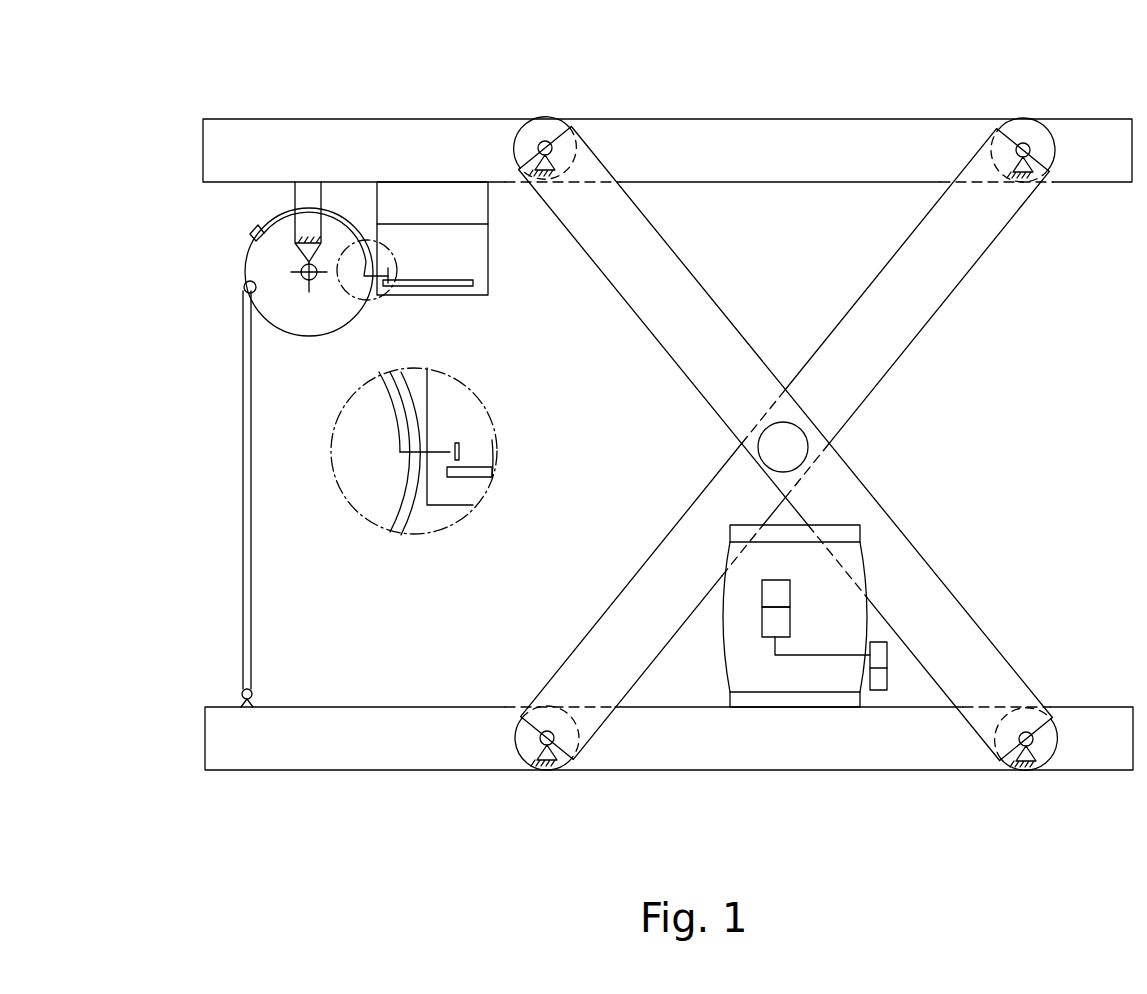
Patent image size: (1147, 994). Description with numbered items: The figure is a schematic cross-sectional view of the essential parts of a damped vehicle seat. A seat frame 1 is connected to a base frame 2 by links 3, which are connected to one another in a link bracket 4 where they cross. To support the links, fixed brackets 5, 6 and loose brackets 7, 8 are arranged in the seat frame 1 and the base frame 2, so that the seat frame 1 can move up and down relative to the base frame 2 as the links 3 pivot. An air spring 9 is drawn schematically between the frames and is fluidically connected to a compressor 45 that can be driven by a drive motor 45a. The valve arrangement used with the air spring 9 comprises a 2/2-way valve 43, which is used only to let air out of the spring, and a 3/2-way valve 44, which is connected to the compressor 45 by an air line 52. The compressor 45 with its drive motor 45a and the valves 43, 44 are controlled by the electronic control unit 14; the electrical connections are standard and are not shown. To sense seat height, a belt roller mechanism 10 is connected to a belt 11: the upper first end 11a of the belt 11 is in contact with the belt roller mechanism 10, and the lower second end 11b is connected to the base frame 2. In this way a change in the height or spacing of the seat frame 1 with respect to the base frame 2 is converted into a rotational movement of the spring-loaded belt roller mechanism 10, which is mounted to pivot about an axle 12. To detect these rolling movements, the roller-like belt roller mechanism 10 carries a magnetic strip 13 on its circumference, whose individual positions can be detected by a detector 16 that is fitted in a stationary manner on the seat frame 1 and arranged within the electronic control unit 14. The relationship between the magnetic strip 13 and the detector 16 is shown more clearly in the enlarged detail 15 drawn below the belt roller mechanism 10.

The seat frame 1 is at (827, 143).
The base frame 2 is at (712, 745).
The links 3 is at (933, 290).
The link bracket 4 is at (780, 447).
The fixed bracket 5 is at (1035, 122).
The fixed bracket 6 is at (1033, 770).
The loose bracket 7 is at (555, 128).
The loose bracket 8 is at (553, 770).
The air spring 9 is at (743, 647).
The belt roller mechanism 10 is at (265, 263).
The belt 11 is at (243, 515).
The upper first end 11a is at (246, 296).
The lower second end 11b is at (253, 692).
The axle 12 is at (307, 282).
The magnetic strip 13 is at (262, 232).
The electronic control unit 14 is at (470, 247).
The enlarged detail 15 is at (455, 398).
The detector 16 is at (457, 451).
The 2/2-way valve 43 is at (782, 596).
The 3/2-way valve 44 is at (782, 628).
The compressor 45 is at (888, 660).
The drive motor 45a is at (876, 680).
The air line 52 is at (822, 662).